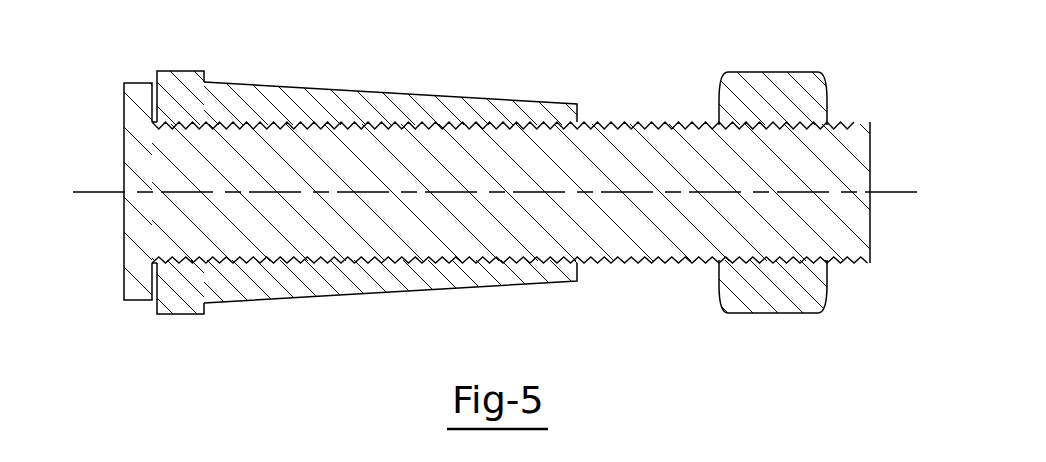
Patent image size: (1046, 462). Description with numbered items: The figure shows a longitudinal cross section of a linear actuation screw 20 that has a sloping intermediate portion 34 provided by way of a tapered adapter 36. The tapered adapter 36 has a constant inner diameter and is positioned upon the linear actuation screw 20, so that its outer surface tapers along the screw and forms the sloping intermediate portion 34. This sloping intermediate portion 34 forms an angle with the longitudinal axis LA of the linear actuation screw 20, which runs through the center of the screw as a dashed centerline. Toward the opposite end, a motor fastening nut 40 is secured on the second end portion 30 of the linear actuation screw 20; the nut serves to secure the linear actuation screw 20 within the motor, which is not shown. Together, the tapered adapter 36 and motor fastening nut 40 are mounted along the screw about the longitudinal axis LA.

The linear actuation screw 20 is at (170, 158).
The second end portion 30 is at (813, 248).
The sloping intermediate portion 34 is at (400, 93).
The tapered adapter 36 is at (166, 66).
The motor fastening nut 40 is at (797, 72).
The longitudinal axis LA is at (95, 194).